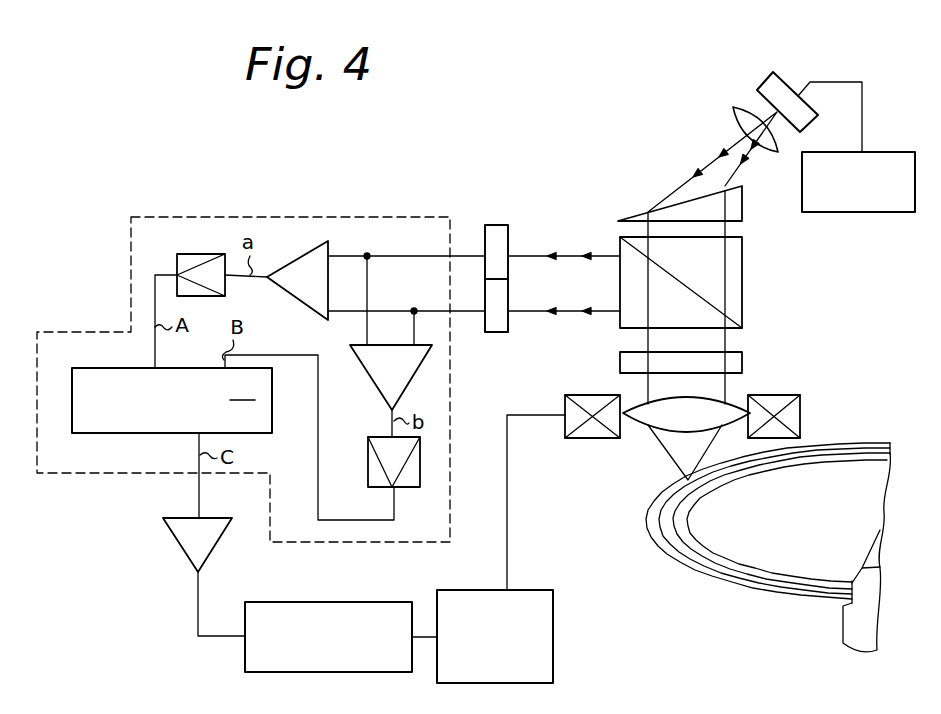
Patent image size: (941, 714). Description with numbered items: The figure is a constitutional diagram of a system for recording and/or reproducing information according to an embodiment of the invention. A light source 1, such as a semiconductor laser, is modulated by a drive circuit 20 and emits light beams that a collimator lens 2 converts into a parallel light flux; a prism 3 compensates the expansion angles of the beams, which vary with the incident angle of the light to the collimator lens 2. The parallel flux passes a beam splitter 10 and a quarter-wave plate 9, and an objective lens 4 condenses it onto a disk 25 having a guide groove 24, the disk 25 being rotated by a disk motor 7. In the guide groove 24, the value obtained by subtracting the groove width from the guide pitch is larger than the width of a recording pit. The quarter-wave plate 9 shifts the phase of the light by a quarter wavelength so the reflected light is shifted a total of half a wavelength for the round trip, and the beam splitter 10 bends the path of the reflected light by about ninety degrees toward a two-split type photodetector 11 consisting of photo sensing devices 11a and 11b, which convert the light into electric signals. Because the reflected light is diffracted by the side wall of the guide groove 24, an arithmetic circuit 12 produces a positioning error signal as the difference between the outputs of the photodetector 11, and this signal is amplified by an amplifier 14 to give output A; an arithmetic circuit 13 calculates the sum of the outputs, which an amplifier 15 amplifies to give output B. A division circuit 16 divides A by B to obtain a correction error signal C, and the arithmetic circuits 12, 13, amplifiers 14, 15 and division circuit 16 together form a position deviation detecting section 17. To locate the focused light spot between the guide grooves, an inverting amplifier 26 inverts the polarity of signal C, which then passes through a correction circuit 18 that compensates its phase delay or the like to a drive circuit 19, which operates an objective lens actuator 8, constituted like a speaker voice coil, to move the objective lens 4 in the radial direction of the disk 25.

The light source 1 is at (770, 84).
The collimator lens 2 is at (732, 113).
The prism 3 is at (743, 205).
The objective lens 4 is at (640, 422).
The disk motor 7 is at (843, 628).
The objective lens actuator 8 is at (787, 395).
The quarter-wave plate 9 is at (742, 354).
The beam splitter 10 is at (742, 275).
The two-split type photodetector 11 is at (500, 225).
The photo sensing device 11a is at (510, 238).
The photo sensing device 11b is at (485, 290).
The arithmetic circuit 12 is at (324, 241).
The arithmetic circuit 13 is at (422, 368).
The amplifier 14 is at (193, 254).
The amplifier 15 is at (420, 462).
The division circuit 16 is at (272, 407).
The position deviation detecting section 17 is at (385, 217).
The correction circuit 18 is at (245, 660).
The drive circuit 19 is at (553, 633).
The drive circuit 20 is at (872, 212).
The guide groove 24 is at (882, 443).
The disk 25 is at (837, 447).
The inverting amplifier 26 is at (215, 547).